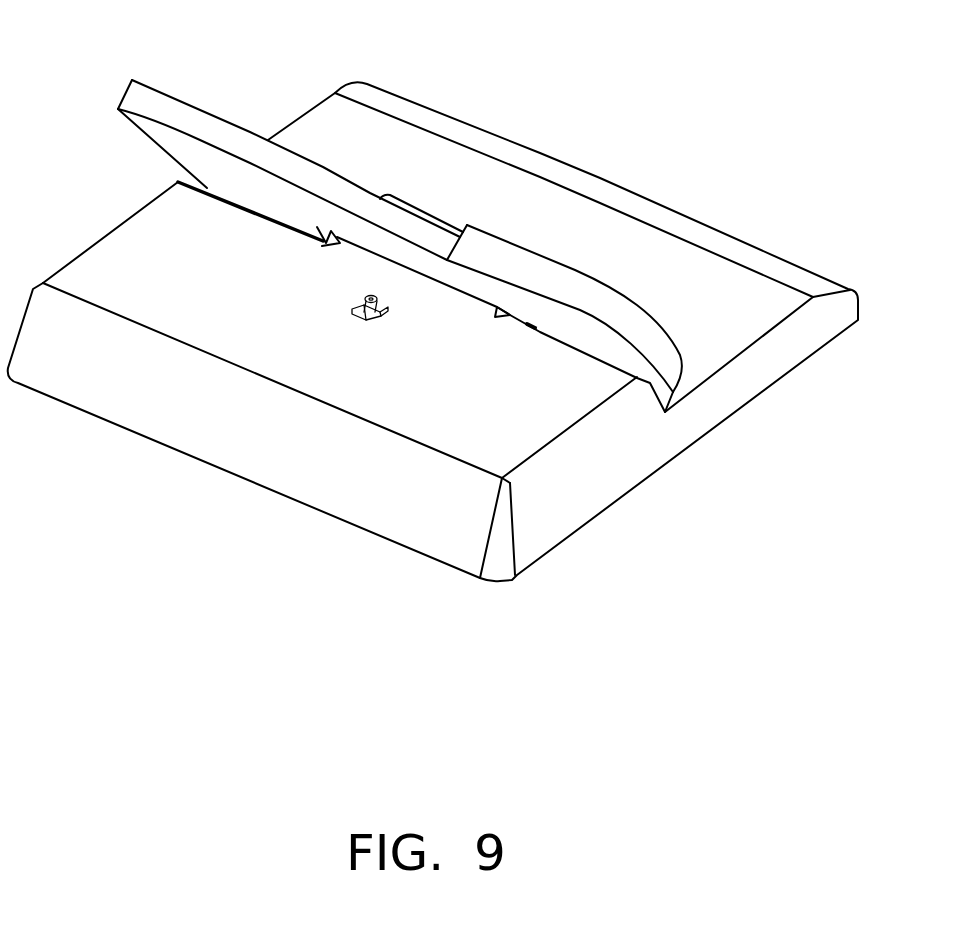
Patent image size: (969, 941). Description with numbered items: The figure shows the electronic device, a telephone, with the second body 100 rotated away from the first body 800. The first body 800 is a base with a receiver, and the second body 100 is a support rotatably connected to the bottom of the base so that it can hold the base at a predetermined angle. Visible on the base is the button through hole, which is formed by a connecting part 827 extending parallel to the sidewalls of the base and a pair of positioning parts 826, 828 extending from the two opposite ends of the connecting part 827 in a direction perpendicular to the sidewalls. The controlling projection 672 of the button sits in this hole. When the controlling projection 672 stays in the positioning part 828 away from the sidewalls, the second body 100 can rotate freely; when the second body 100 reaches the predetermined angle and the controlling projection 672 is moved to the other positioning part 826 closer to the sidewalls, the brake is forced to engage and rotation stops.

The second body 100 is at (160, 103).
The first body 800 is at (560, 213).
The controlling projection 672 is at (365, 300).
The positioning part 826 is at (388, 307).
The connecting part 827 is at (375, 317).
The positioning part 828 is at (355, 318).